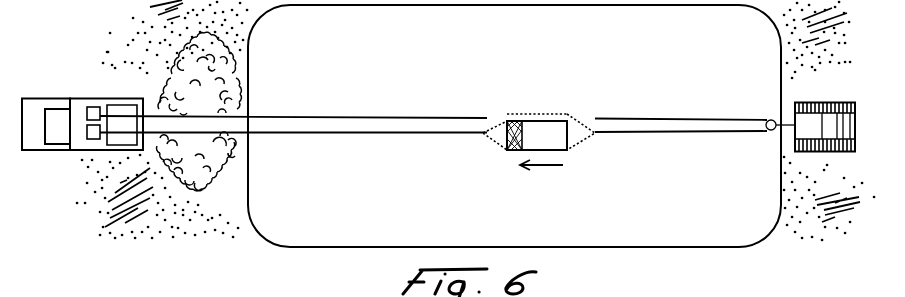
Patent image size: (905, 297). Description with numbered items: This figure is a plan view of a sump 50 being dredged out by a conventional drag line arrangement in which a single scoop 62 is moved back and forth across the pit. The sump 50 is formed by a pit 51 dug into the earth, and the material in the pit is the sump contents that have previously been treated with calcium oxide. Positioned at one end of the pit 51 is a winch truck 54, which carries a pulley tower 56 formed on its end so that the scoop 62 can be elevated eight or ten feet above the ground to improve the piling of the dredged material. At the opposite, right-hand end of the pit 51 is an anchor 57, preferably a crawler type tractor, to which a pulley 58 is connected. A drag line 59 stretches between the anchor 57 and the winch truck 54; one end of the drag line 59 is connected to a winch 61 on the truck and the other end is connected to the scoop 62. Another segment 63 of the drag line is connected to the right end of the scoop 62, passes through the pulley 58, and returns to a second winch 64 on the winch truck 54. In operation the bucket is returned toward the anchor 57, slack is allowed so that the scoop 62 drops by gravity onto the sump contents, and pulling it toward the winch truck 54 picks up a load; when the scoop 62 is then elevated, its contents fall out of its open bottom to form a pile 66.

The sump 50 is at (273, 285).
The pit 51 is at (696, 244).
The winch truck 54 is at (52, 99).
The pulley tower 56 is at (144, 104).
The anchor 57 is at (826, 103).
The pulley 58 is at (765, 124).
The drag line 59 is at (370, 134).
The winch 61 is at (93, 139).
The scoop 62 is at (558, 141).
The drag line segment 63 is at (333, 117).
The winch 64 is at (94, 107).
The pile 66 is at (220, 170).